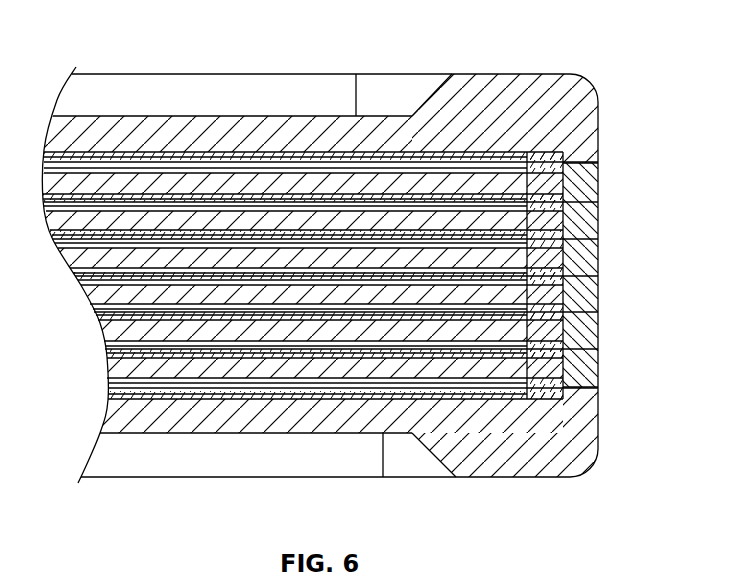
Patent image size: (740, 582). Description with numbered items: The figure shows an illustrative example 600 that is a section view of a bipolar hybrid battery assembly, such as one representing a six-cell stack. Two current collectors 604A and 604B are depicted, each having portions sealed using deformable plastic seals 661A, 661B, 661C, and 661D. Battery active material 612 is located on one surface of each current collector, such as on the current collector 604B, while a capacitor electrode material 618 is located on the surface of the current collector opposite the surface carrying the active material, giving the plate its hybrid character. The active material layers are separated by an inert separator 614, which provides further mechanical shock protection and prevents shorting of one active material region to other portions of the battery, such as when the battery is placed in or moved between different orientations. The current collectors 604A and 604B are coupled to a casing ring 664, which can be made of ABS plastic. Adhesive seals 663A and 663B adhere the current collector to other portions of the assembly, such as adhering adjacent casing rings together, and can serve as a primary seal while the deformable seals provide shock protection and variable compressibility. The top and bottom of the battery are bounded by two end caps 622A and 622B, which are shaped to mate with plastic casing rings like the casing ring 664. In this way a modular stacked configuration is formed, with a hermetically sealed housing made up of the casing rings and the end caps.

The illustrative example 600 is at (99, 44).
The active material 612 is at (228, 397).
The inert separator 614 is at (242, 263).
The capacitor electrode material 618 is at (368, 238).
The current collector 604A is at (395, 220).
The current collector 604B is at (335, 398).
The end cap 622A is at (525, 85).
The end cap 622B is at (525, 463).
The deformable seal 661A is at (568, 218).
The deformable seal 661B is at (567, 243).
The deformable seal 661C is at (572, 312).
The deformable seal 661D is at (588, 325).
The adhesive seal 663A is at (565, 248).
The adhesive seal 663B is at (408, 435).
The casing ring 664 is at (583, 272).